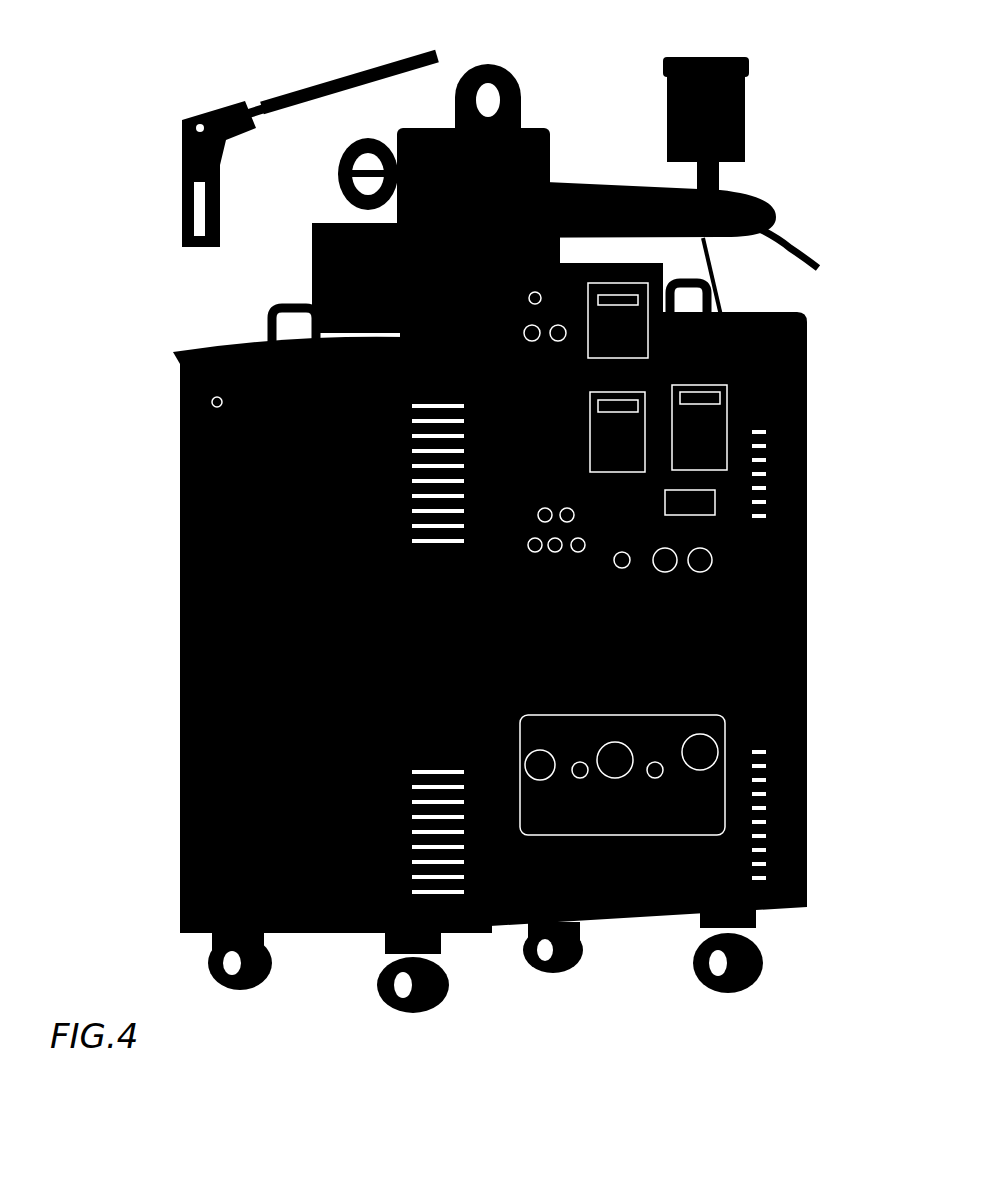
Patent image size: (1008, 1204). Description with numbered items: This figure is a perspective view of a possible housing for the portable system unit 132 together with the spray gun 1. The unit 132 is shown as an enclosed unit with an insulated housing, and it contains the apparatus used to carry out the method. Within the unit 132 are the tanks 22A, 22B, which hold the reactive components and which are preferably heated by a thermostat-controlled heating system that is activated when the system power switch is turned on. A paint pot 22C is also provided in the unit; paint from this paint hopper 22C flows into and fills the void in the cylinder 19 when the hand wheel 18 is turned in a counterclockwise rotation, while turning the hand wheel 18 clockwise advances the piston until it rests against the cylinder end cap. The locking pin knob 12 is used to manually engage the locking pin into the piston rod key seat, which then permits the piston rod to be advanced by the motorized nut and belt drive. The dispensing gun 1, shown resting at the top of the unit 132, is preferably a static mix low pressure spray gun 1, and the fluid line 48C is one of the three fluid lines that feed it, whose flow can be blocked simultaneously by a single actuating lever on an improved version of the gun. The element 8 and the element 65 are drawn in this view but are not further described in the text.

The spray gun 1 is at (188, 122).
The lifting eye 8 is at (503, 68).
The locking pin knob 12 is at (524, 118).
The hand wheel 18 is at (340, 178).
The cylinder 19 is at (578, 177).
The tank 22A is at (180, 618).
The tank 22B is at (807, 558).
The paint pot 22C is at (746, 118).
The fluid line 48C is at (712, 282).
The cable 65 is at (780, 241).
The unit 132 is at (633, 920).